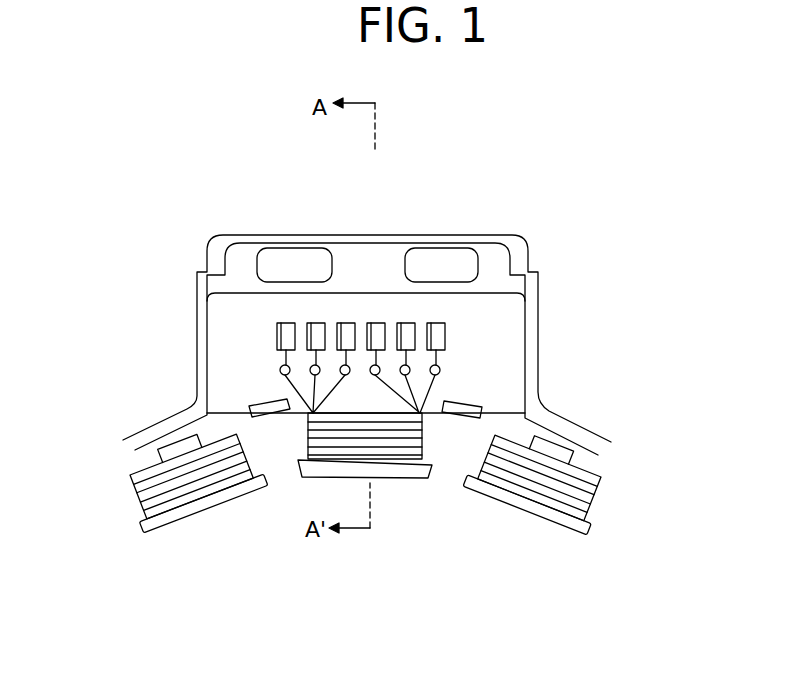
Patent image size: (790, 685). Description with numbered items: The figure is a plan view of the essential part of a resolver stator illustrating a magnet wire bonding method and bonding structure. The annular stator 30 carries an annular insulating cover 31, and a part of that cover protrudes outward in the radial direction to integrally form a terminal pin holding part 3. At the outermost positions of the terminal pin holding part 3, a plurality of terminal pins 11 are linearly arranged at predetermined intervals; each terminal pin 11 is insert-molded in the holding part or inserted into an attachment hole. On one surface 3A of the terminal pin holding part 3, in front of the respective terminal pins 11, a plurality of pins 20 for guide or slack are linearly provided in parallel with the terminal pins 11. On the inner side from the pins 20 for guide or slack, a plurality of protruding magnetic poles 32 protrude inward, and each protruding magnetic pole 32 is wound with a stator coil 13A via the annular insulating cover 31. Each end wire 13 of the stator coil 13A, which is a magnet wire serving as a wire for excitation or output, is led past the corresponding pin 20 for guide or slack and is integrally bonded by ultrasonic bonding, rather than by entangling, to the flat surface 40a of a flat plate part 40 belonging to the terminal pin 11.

The terminal pin holding part 3 is at (507, 342).
The one surface of the terminal pin holding part 3A is at (243, 317).
The terminal pin 11 is at (268, 328).
The end wire 13 is at (388, 323).
The stator coil 13A is at (542, 487).
The pin for guide or slack 20 is at (280, 368).
The annular stator 30 is at (593, 498).
The annular insulating cover 31 is at (296, 470).
The protruding magnetic pole 32 is at (191, 512).
The flat plate part 40 is at (380, 320).
The flat surface 40a is at (440, 340).